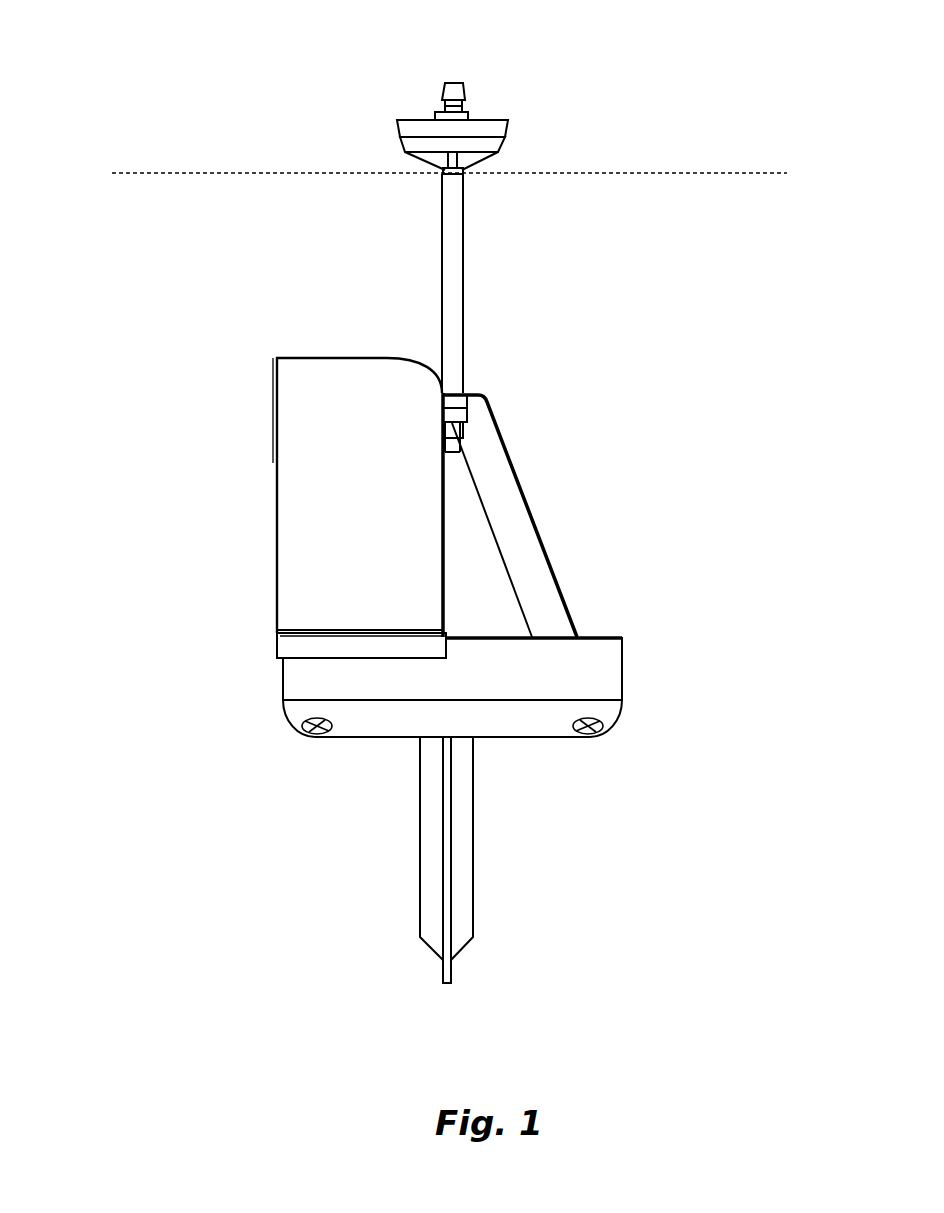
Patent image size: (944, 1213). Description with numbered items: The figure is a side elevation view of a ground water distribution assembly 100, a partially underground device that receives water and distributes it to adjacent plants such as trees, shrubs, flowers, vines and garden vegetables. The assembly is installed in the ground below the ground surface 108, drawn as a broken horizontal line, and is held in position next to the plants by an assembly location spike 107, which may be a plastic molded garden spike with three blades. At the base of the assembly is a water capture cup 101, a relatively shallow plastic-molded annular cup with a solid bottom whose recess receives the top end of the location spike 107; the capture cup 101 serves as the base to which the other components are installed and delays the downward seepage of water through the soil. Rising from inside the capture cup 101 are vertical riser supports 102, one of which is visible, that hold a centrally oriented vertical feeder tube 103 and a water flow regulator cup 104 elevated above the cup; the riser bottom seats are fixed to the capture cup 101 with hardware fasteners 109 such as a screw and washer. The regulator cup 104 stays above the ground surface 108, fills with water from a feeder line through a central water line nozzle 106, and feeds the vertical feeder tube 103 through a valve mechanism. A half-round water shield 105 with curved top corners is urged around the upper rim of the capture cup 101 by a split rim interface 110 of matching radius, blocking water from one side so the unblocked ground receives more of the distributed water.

The ground water distribution assembly 100 is at (662, 104).
The water capture cup 101 is at (622, 668).
The vertical riser supports 102 is at (533, 520).
The vertical feeder tube 103 is at (465, 360).
The water flow regulator cup 104 is at (402, 147).
The half-round water shield 105 is at (277, 498).
The central water line nozzle 106 is at (452, 82).
The assembly location spike 107 is at (473, 893).
The ground surface 108 is at (292, 172).
The hardware fasteners 109 is at (577, 740).
The split rim interface 110 is at (277, 647).